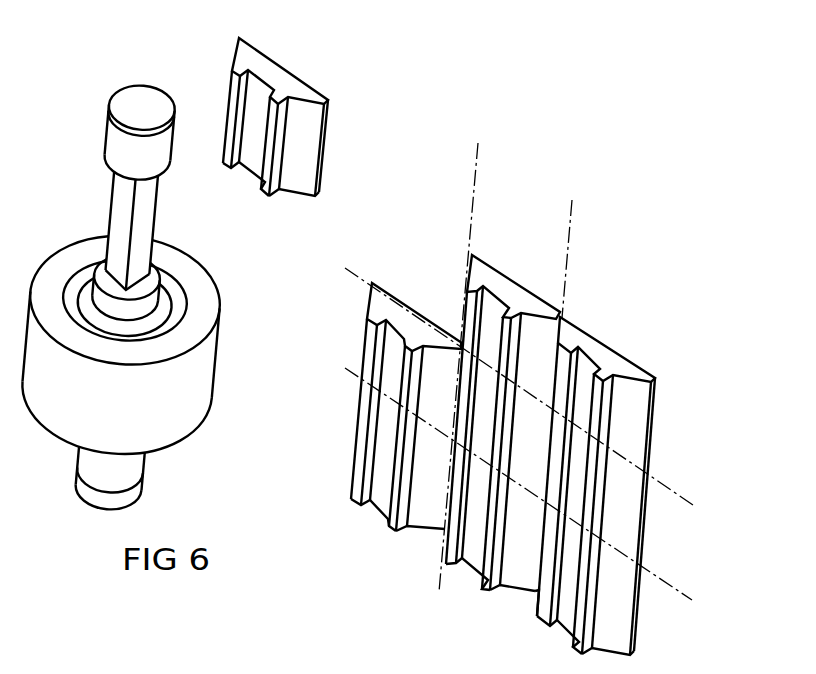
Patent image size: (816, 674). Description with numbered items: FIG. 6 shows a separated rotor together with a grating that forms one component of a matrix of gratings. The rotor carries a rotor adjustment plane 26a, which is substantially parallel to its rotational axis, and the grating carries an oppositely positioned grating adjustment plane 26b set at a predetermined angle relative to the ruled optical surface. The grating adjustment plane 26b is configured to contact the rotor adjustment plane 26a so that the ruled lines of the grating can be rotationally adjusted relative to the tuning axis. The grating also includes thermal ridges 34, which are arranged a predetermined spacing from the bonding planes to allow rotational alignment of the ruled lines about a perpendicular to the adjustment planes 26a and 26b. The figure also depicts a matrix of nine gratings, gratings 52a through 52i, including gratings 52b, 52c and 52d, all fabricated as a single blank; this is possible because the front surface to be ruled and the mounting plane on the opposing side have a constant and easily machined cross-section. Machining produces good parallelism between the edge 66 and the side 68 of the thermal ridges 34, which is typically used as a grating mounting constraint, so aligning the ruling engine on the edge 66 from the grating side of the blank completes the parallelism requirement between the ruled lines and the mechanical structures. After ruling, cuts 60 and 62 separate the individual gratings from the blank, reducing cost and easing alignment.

The rotor adjustment plane 26a is at (197, 232).
The grating adjustment plane 26b is at (316, 107).
The thermal ridges 34 is at (472, 610).
The grating 52a is at (345, 112).
The grating 52b is at (514, 377).
The grating 52c is at (600, 446).
The grating 52d is at (391, 376).
The grating 52i is at (686, 515).
The cut 60 is at (561, 318).
The cut 62 is at (578, 434).
The edge 66 is at (714, 498).
The side of thermal ridge 68 is at (502, 640).